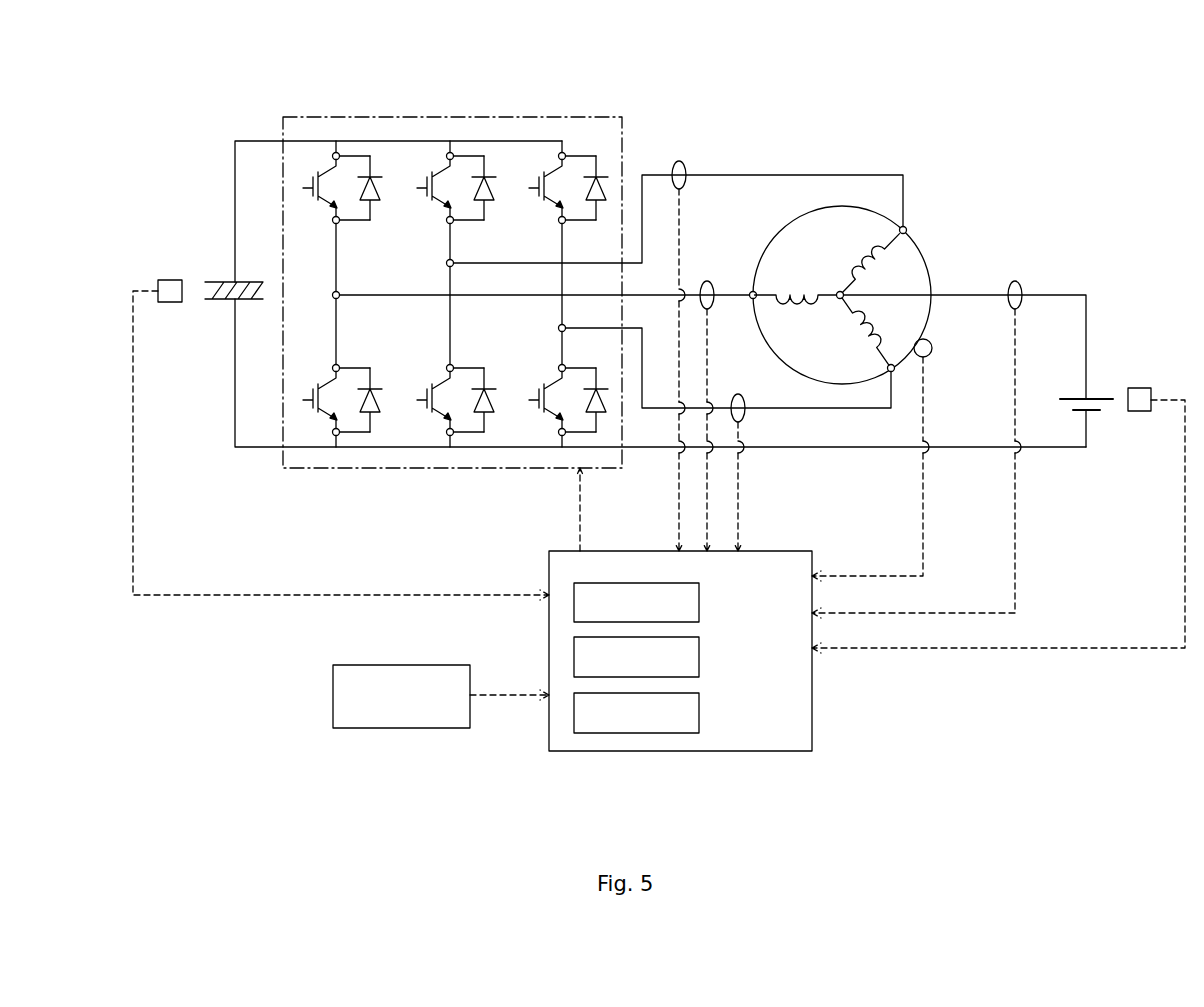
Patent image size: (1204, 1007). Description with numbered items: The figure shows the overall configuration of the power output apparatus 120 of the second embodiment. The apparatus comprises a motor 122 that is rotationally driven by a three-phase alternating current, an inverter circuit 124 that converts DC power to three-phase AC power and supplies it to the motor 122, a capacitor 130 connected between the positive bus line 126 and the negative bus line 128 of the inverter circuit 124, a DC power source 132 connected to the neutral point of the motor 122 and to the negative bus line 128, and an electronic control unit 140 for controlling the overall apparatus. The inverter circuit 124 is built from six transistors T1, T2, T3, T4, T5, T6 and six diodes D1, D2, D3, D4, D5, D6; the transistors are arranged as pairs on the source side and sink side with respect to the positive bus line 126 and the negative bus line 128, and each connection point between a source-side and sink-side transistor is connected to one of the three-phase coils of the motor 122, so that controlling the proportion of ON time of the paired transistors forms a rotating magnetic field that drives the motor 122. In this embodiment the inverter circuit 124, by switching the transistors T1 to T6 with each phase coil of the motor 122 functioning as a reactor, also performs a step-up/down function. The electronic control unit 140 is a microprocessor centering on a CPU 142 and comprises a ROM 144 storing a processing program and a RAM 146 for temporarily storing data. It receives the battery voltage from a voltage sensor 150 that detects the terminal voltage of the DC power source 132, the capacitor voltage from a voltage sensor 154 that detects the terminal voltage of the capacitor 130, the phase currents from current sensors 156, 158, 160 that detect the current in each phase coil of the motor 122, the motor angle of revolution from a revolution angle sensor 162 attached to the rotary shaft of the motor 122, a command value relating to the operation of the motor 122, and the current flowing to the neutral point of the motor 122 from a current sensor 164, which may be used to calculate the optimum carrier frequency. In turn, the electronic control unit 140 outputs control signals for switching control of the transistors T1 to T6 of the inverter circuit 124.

The power output apparatus 120 is at (1064, 130).
The motor 122 is at (917, 237).
The inverter circuit 124 is at (507, 117).
The positive bus line 126 is at (387, 140).
The negative bus line 128 is at (818, 449).
The capacitor 130 is at (215, 282).
The DC power source 132 is at (1070, 395).
The electronic control unit 140 is at (735, 752).
The CPU 142 is at (701, 601).
The ROM 144 is at (701, 656).
The RAM 146 is at (701, 712).
The voltage sensor 150 is at (1140, 388).
The voltage sensor 154 is at (170, 305).
The current sensor 156 is at (708, 281).
The current sensor 158 is at (680, 161).
The current sensor 160 is at (738, 394).
The revolution angle sensor 162 is at (937, 338).
The current sensor 164 is at (1015, 281).
The transistor T1 is at (310, 207).
The transistor T2 is at (311, 382).
The transistor T3 is at (424, 207).
The transistor T4 is at (425, 382).
The transistor T5 is at (536, 207).
The transistor T6 is at (537, 382).
The diode D1 is at (378, 207).
The diode D2 is at (376, 382).
The diode D3 is at (492, 207).
The diode D4 is at (490, 382).
The diode D5 is at (604, 207).
The diode D6 is at (602, 382).